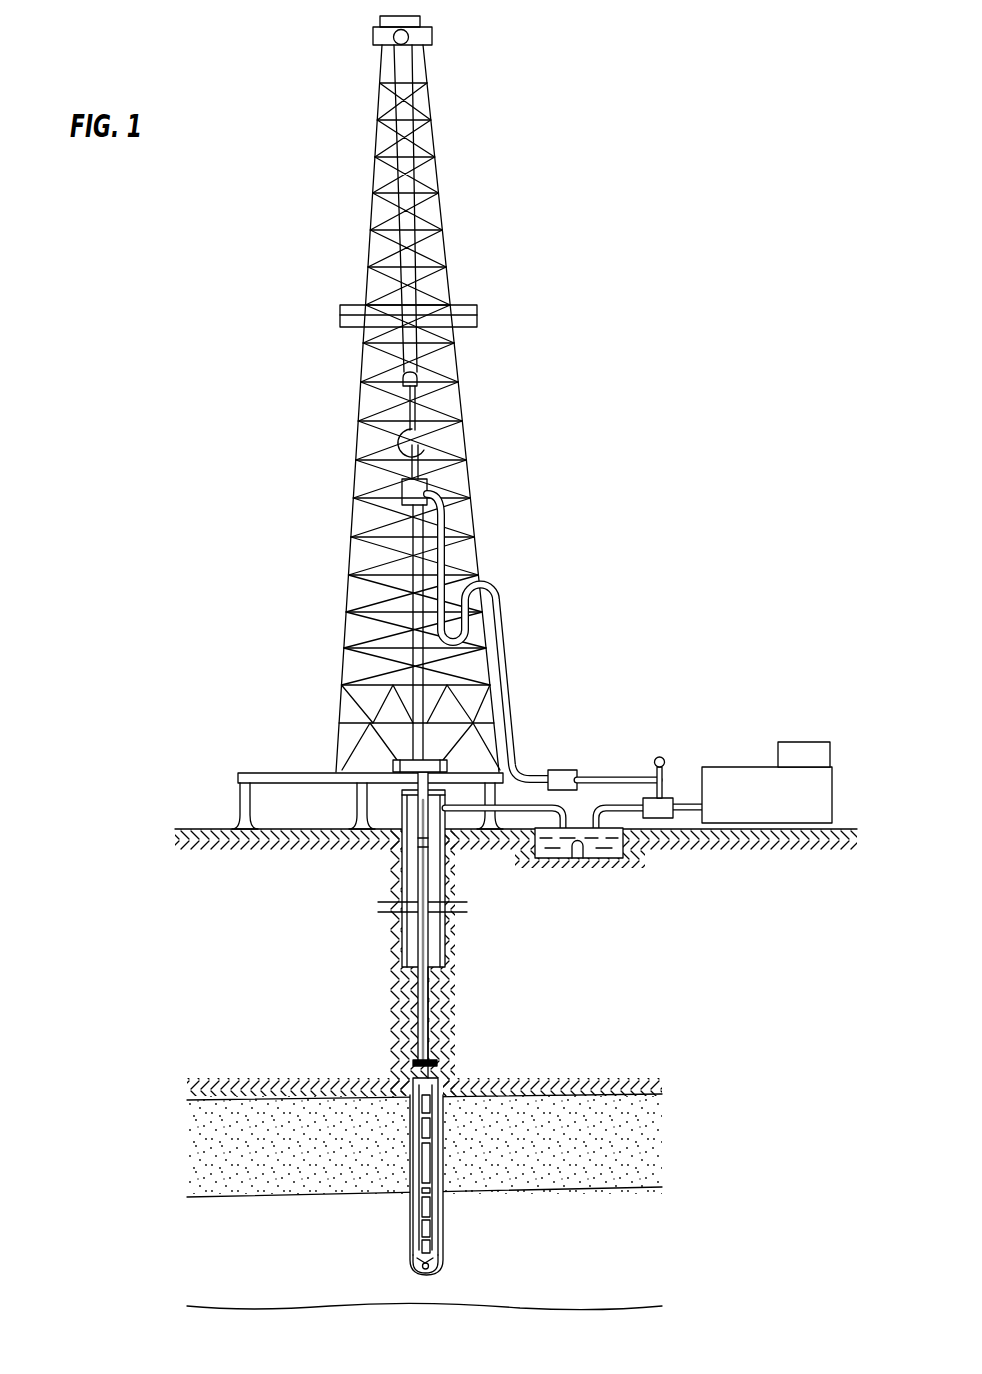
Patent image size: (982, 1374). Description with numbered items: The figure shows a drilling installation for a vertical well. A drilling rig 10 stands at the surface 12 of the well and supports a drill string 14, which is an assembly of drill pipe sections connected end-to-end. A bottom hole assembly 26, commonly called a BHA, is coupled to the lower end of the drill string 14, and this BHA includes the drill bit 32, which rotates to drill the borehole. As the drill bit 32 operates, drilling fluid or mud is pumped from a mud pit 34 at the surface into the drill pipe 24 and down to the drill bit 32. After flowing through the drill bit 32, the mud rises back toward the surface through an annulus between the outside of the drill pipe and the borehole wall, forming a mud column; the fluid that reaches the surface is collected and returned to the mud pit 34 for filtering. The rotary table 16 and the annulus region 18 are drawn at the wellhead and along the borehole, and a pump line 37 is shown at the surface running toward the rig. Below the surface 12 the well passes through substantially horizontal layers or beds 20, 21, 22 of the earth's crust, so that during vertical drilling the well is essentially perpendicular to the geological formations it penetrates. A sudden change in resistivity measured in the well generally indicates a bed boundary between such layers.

The drilling rig 10 is at (587, 398).
The surface 12 is at (187, 830).
The drill string 14 is at (433, 1015).
The rotary table 16 is at (402, 760).
The wellbore annulus 18 is at (432, 984).
The bed 20 is at (659, 1003).
The bed 21 is at (629, 1158).
The bed 22 is at (630, 1268).
The drill pipe 24 is at (402, 873).
The bottom hole assembly 26 is at (402, 1268).
The drill bit 32 is at (440, 1262).
The mud pit 34 is at (560, 870).
The mud pump 37 is at (606, 777).